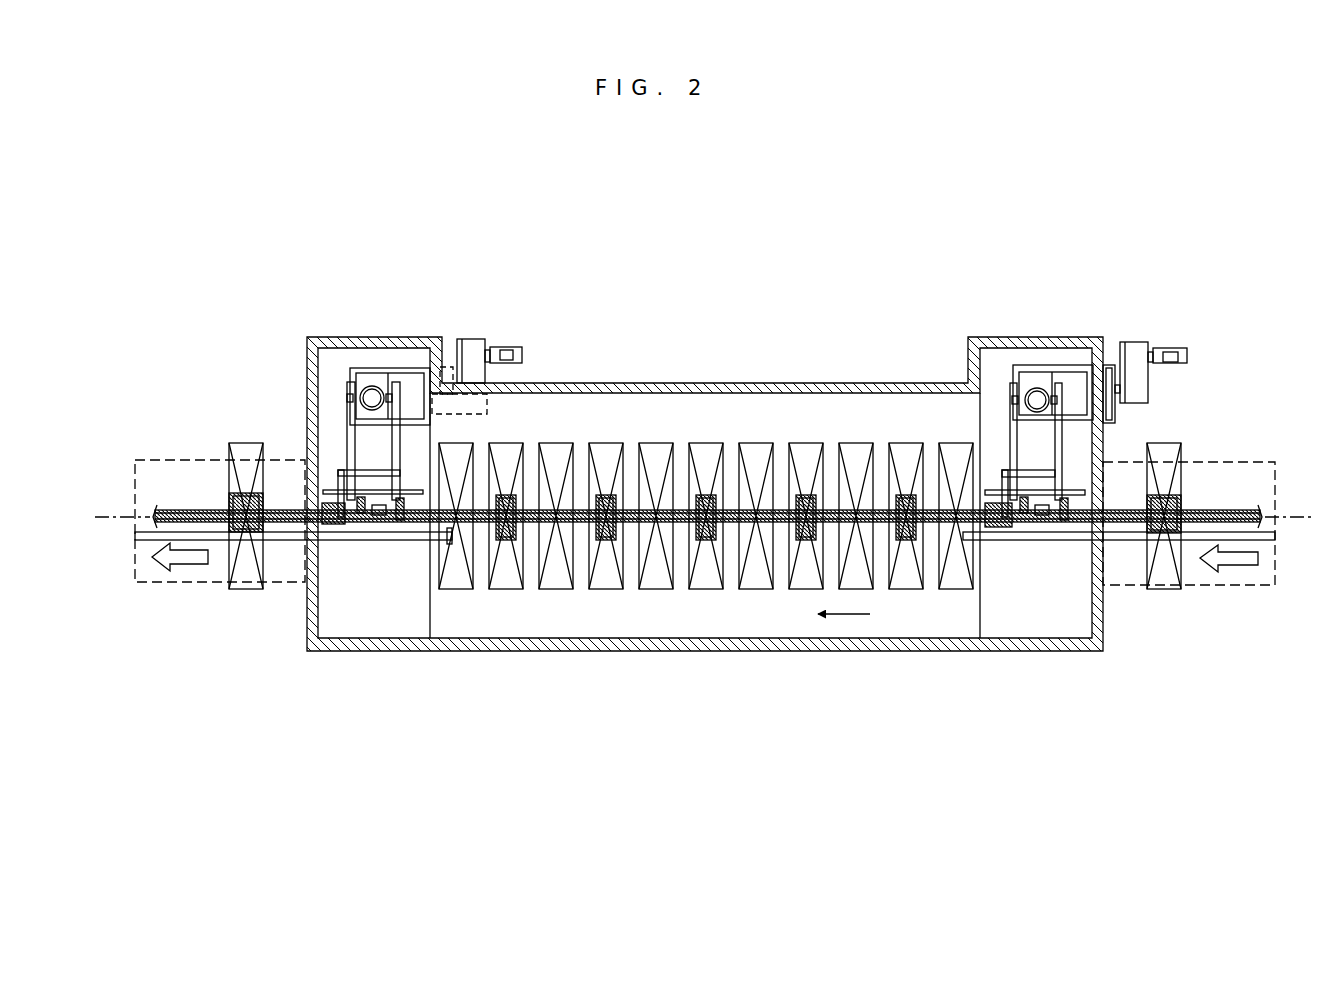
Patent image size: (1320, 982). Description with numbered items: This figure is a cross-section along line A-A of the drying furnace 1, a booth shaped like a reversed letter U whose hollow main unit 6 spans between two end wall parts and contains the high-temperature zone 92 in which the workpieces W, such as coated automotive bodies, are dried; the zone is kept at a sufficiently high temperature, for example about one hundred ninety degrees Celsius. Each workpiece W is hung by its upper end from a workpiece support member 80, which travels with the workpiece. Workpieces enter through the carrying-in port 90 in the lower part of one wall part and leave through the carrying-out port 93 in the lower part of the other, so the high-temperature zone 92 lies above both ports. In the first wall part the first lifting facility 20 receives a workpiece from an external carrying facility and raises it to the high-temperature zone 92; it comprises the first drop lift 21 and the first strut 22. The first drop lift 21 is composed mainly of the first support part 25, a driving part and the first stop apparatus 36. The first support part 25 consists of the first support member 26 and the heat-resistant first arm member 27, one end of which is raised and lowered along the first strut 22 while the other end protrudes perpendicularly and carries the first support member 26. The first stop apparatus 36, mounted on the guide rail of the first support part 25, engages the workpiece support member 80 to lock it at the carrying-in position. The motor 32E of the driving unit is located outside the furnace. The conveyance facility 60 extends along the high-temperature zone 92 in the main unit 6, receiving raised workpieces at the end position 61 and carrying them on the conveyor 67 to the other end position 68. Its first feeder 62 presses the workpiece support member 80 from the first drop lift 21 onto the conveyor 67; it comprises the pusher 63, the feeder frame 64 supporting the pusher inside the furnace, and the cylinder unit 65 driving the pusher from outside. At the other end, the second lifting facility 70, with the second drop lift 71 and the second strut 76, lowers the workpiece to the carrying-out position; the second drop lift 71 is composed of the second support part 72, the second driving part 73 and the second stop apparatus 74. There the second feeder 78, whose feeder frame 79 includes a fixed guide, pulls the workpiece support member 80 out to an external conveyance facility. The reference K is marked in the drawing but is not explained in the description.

The drying furnace 1 is at (1108, 300).
The main unit 6 is at (580, 652).
The first lifting facility 20 is at (1002, 431).
The first drop lift 21 is at (1048, 530).
The first strut 22 is at (1047, 418).
The first support part 25 is at (1023, 293).
The first support member 26 is at (990, 478).
The first arm member 27 is at (1009, 450).
The motor 32E is at (1173, 348).
The first stop apparatus 36 is at (1005, 527).
The conveyance facility 60 is at (706, 516).
The end position 61 is at (1051, 631).
The first feeder 62 is at (1282, 668).
The pusher 63 is at (1086, 538).
The feeder frame 64 is at (1072, 540).
The cylinder unit 65 is at (1190, 532).
The conveyor 67 is at (528, 508).
The other end position 68 is at (386, 631).
The second lifting facility 70 is at (342, 451).
The second drop lift 71 is at (406, 443).
The second support part 72 is at (346, 447).
The second driving part 73 is at (472, 330).
The second stop apparatus 74 is at (334, 530).
The second strut 76 is at (362, 380).
The second feeder 78 is at (287, 548).
The feeder frame 79 is at (378, 538).
The workpiece support member 80 is at (232, 497).
The carrying-in port 90 is at (1110, 451).
The high-temperature zone 92 is at (786, 634).
The carrying-out port 93 is at (300, 449).
The workpiece W is at (245, 452).
The transport direction K is at (848, 616).